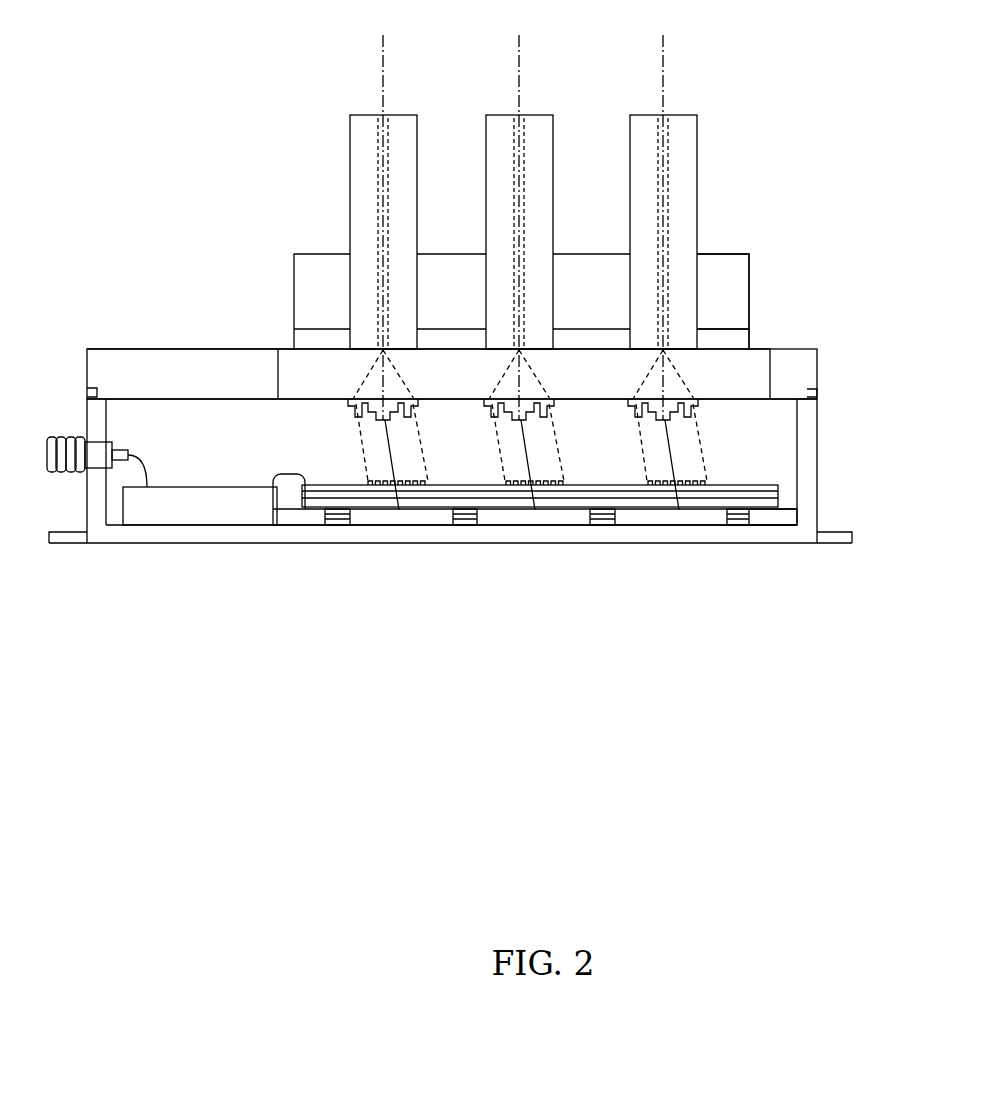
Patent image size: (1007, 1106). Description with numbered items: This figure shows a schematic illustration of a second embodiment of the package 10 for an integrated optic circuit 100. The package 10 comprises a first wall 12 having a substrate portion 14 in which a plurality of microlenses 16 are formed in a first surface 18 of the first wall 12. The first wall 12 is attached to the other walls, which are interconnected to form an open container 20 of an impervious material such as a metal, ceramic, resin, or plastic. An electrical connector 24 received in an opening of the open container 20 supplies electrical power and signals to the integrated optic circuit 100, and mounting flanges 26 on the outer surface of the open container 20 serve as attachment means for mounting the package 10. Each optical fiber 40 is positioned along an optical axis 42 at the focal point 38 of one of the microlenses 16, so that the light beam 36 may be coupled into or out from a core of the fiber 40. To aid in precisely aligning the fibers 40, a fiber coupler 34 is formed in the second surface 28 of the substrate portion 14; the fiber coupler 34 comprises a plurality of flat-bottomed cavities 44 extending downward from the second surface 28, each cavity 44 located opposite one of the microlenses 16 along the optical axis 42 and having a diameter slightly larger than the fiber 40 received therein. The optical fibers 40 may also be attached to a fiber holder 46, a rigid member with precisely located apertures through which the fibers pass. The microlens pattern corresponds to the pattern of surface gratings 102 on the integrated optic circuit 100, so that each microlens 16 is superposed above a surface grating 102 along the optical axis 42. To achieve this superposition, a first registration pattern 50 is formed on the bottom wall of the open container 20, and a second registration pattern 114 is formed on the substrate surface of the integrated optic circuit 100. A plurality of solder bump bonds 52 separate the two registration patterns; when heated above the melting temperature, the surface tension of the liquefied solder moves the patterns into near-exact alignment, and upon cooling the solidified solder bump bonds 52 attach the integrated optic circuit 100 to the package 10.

The package 10 is at (545, 592).
The first wall 12 is at (87, 363).
The substrate portion 14 is at (293, 365).
The microlenses 16 is at (351, 405).
The first surface 18 is at (202, 402).
The open container 20 is at (405, 545).
The electrical connector 24 is at (68, 437).
The mounting flanges 26 is at (58, 532).
The second surface 28 is at (202, 348).
The fiber coupler 34 is at (738, 342).
The light beam 36 is at (422, 448).
The focal point 38 is at (385, 350).
The optical fiber 40 is at (350, 157).
The optical axis 42 is at (383, 73).
The cavities 44 is at (697, 347).
The fiber holder 46 is at (320, 254).
The first registration pattern 50 is at (739, 525).
The solder bump bonds 52 is at (750, 522).
The integrated optic circuit 100 is at (777, 485).
The surface gratings 102 is at (550, 480).
The second registration pattern 114 is at (747, 510).